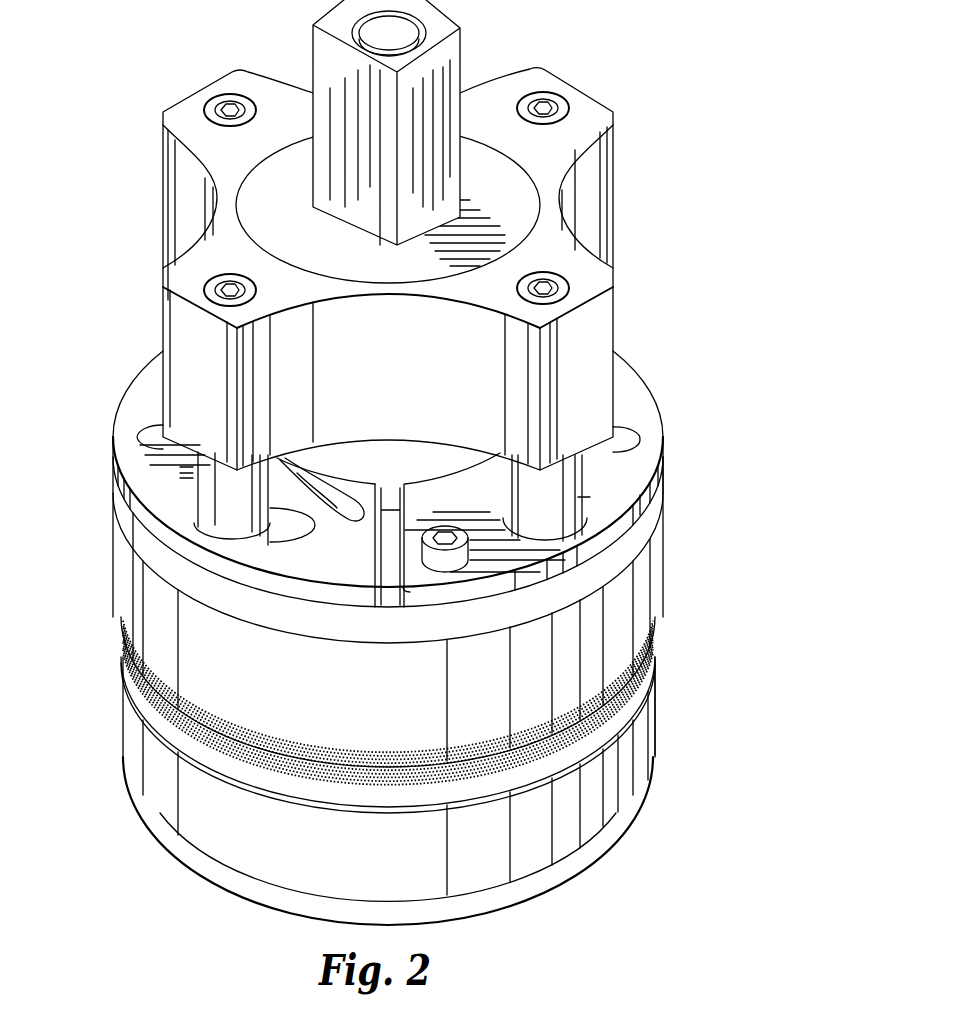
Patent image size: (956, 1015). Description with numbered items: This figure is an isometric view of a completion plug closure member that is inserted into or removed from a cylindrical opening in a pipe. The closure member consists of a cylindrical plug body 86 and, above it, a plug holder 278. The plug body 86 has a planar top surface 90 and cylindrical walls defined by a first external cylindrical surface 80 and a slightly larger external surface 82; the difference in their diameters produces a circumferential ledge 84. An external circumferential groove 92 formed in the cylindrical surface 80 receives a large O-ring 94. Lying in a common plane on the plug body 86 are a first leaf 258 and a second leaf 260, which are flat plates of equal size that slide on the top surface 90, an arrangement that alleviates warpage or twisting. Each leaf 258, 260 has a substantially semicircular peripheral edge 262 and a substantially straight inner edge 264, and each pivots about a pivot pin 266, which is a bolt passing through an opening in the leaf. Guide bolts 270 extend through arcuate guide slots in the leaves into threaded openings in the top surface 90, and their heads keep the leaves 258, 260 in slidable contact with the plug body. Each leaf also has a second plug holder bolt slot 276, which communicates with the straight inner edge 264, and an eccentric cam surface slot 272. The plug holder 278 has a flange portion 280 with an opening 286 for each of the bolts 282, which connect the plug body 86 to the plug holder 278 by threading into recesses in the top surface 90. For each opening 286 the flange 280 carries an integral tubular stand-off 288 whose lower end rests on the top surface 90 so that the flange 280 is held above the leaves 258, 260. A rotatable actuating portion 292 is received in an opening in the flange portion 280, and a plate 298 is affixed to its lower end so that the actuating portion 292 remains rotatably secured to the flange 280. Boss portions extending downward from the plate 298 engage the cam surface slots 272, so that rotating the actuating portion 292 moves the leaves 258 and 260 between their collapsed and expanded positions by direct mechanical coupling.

The first external cylindrical surface 80 is at (663, 553).
The external surface 82 is at (135, 535).
The circumferential ledge 84 is at (155, 592).
The cylindrical plug body 86 is at (690, 590).
The top surface 90 is at (391, 560).
The external circumferential groove 92 is at (303, 747).
The O-ring 94 is at (662, 664).
The first leaf 258 is at (133, 392).
The second leaf 260 is at (643, 398).
The semicircular peripheral edge 262 is at (118, 490).
The straight inner edge 264 is at (383, 590).
The pivot pin 266 is at (455, 565).
The guide bolt 270 is at (157, 439).
The cam surface slot 272 is at (320, 500).
The second plug holder bolt slot 276 is at (300, 527).
The plug holder 278 is at (595, 76).
The flange portion 280 is at (543, 245).
The bolt 282 is at (226, 110).
The opening 286 is at (205, 107).
The tubular stand-off 288 is at (220, 512).
The rotatable actuating portion 292 is at (322, 53).
The plate 298 is at (381, 462).